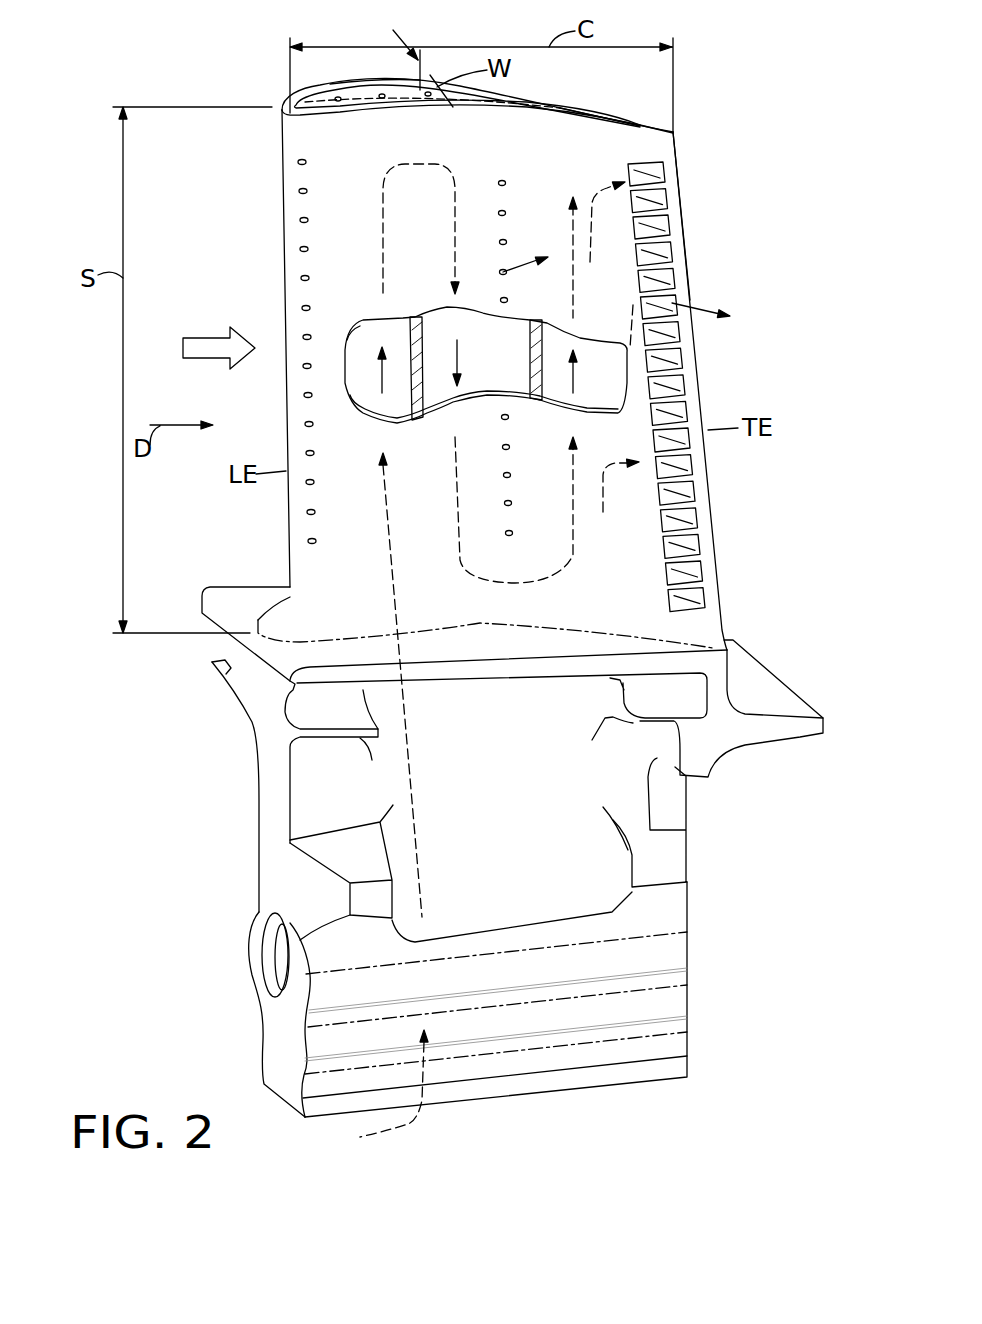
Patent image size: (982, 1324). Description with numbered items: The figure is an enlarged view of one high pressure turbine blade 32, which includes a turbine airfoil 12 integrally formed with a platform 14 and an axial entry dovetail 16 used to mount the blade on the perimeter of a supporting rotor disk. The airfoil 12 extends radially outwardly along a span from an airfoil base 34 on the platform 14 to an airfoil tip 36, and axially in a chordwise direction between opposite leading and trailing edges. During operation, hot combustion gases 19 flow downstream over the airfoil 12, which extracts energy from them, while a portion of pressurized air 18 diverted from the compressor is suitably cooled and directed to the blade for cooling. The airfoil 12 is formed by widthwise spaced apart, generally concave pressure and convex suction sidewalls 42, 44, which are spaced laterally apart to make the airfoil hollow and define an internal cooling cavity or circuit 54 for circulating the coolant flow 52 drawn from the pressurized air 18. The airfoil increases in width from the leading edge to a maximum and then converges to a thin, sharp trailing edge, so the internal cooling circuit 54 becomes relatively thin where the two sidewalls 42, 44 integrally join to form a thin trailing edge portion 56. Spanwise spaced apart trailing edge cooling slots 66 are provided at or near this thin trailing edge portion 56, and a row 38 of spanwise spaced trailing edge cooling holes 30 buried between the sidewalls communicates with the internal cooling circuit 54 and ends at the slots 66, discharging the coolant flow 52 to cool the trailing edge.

The turbine airfoil 12 is at (263, 112).
The platform 14 is at (213, 586).
The axial entry dovetail 16 is at (258, 930).
The pressurized air 18 is at (410, 1124).
The hot combustion gases 19 is at (207, 337).
The trailing edge cooling holes 30 is at (699, 364).
The high pressure turbine blade 32 is at (724, 94).
The airfoil base 34 is at (445, 623).
The airfoil tip 36 is at (598, 108).
The row of trailing edge cooling holes 38 is at (663, 152).
The pressure sidewall 42 is at (549, 195).
The suction sidewall 44 is at (320, 210).
The coolant flow 52 is at (688, 308).
The internal cooling circuit 54 is at (513, 381).
The thin trailing edge portion 56 is at (623, 108).
The trailing edge cooling slots 66 is at (647, 227).